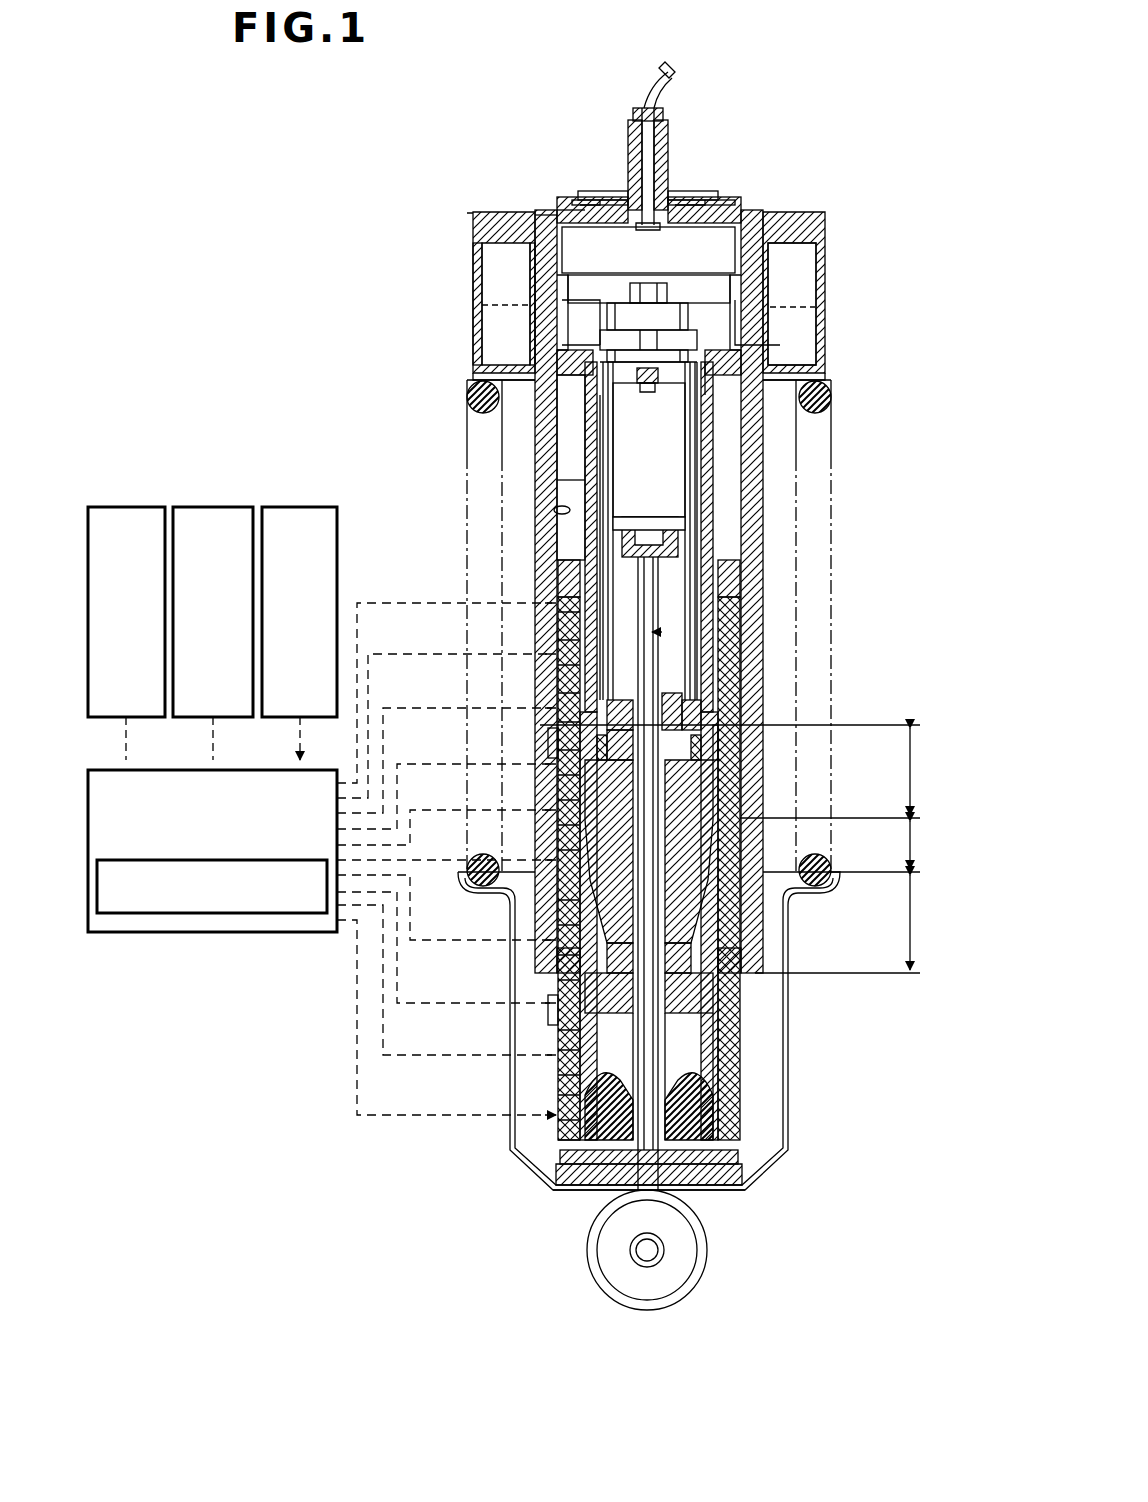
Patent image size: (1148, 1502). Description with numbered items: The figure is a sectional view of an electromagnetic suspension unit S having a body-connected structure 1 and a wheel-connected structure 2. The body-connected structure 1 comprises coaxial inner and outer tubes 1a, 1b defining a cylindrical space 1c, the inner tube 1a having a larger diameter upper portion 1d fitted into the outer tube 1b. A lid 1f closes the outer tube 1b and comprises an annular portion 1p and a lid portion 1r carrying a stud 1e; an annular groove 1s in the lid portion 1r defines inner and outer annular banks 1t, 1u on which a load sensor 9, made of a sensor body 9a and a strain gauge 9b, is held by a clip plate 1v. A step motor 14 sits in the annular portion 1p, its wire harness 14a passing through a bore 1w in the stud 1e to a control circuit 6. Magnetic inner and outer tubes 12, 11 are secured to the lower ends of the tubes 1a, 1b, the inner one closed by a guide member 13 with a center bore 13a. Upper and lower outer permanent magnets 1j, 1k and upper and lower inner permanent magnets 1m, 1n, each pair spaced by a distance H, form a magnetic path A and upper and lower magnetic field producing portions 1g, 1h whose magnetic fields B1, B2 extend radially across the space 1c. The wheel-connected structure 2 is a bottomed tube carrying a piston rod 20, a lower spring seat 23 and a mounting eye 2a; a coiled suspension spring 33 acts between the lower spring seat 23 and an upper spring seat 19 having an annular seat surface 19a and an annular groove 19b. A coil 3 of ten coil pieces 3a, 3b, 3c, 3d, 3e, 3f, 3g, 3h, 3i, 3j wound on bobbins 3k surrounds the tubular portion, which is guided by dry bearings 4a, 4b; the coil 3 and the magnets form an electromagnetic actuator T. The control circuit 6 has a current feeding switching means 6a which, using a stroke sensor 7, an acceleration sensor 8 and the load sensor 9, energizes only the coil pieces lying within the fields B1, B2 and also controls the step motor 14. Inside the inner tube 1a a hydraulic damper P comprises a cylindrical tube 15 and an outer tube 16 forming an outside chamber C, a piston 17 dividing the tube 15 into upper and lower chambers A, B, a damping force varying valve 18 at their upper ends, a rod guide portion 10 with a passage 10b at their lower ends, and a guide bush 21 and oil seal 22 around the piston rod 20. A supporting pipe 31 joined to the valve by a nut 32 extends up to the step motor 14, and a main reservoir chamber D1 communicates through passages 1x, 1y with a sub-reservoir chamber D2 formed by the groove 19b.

The body-connected structure 1 is at (762, 212).
The inner tube 1a is at (588, 468).
The outer tube 1b is at (560, 483).
The cylindrical space 1c is at (556, 512).
The larger diameter upper portion 1d is at (505, 292).
The stud 1e is at (640, 130).
The lid 1f is at (538, 215).
The upper magnetic field producing portion 1g is at (910, 771).
The lower magnetic field producing portion 1h is at (838, 924).
The upper outer permanent magnet 1j is at (718, 752).
The lower outer permanent magnet 1k is at (742, 962).
The upper inner permanent magnet 1m is at (700, 730).
The lower inner permanent magnet 1n is at (712, 1030).
The annular portion 1p is at (478, 248).
The lid portion 1r is at (686, 200).
The annular groove 1s is at (710, 204).
The inner annular bank 1t is at (632, 150).
The outer annular bank 1u is at (548, 210).
The clip plate 1v is at (664, 180).
The bore 1w is at (660, 115).
The passage 1x is at (532, 305).
The passage 1y is at (565, 345).
The wheel-connected structure 2 is at (585, 1196).
The mounting eye 2a is at (708, 1240).
The coil 3 is at (560, 605).
The coil piece 3a is at (560, 630).
The coil piece 3b is at (560, 676).
The coil piece 3c is at (562, 740).
The coil piece 3d is at (563, 785).
The coil piece 3e is at (562, 835).
The coil piece 3f is at (565, 905).
The coil piece 3g is at (566, 965).
The coil piece 3h is at (565, 1042).
The coil piece 3i is at (567, 1065).
The coil piece 3j is at (570, 1125).
The bobbin 3k is at (590, 1160).
The dry bearing 4a is at (708, 580).
The dry bearing 4b is at (700, 990).
The control circuit 6 is at (260, 770).
The current feeding switching means 6a is at (268, 913).
The stroke sensor 7 is at (130, 507).
The acceleration sensor 8 is at (218, 507).
The load sensor 9 is at (298, 507).
The sensor body 9a is at (585, 202).
The strain gauge 9b is at (600, 195).
The rod guide portion 10 is at (662, 722).
The passage 10b is at (675, 690).
The magnetic outer tube 11 is at (668, 790).
The magnetic inner tube 12 is at (700, 932).
The guide member 13 is at (700, 1100).
The center bore 13a is at (648, 1020).
The step motor 14 is at (744, 212).
The wire harness 14a is at (672, 70).
The cylindrical tube 15 is at (700, 440).
The outer tube 16 is at (680, 532).
The piston 17 is at (692, 482).
The damping force varying valve 18 is at (700, 330).
The upper spring seat 19 is at (822, 214).
The annular seat surface 19a is at (475, 388).
The annular groove 19b is at (805, 290).
The piston rod 20 is at (670, 620).
The guide bush 21 is at (690, 650).
The oil seal 22 is at (700, 742).
The lower spring seat 23 is at (790, 1078).
The supporting pipe 31 is at (640, 287).
The nut 32 is at (652, 392).
The coiled suspension spring 33 is at (828, 388).
The upper chamber A is at (467, 845).
The lower chamber B is at (664, 632).
The upper magnetic field B1 is at (565, 715).
The lower magnetic field B2 is at (566, 1010).
The outside chamber C is at (574, 437).
The main reservoir chamber D1 is at (581, 322).
The sub-reservoir chamber D2 is at (770, 322).
The distance H is at (875, 846).
The hydraulic damper P is at (706, 380).
The suspension unit S is at (466, 213).
The electromagnetic actuator T is at (764, 805).